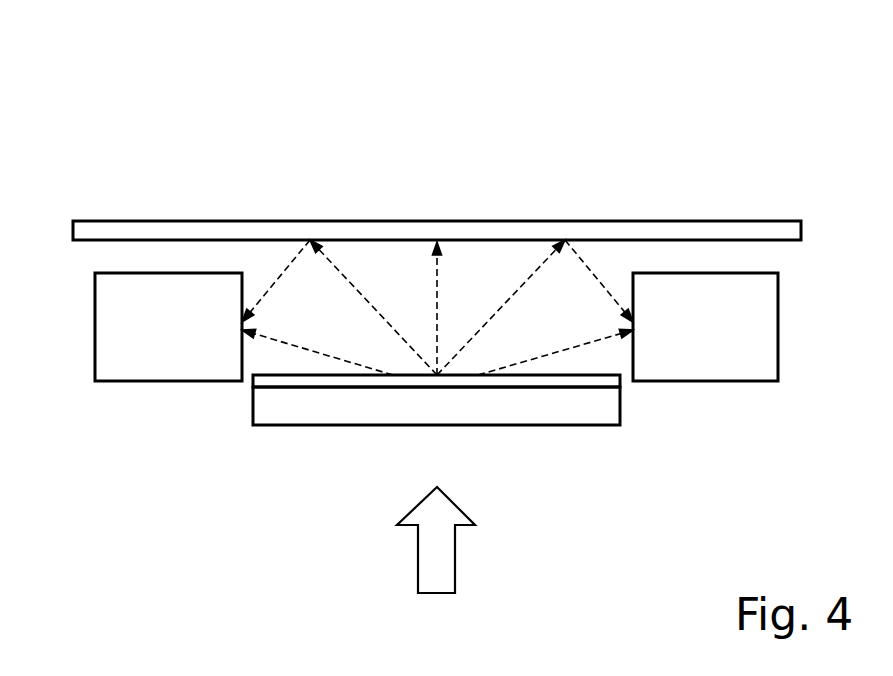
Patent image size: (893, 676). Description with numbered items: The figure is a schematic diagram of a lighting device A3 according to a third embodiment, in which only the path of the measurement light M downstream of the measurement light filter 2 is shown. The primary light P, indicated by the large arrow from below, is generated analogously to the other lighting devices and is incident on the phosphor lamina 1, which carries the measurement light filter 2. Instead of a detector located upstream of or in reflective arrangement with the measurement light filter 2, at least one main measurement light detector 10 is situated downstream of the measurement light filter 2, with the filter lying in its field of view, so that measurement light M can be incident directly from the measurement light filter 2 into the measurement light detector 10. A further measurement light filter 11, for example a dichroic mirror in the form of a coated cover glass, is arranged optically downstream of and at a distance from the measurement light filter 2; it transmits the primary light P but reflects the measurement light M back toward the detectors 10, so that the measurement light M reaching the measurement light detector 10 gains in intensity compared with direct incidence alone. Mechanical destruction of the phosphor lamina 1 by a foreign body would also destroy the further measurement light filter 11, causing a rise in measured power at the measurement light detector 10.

The lighting device A3 is at (150, 82).
The further measurement light filter 11 is at (242, 220).
The main measurement light detector 10 is at (95, 328).
The measurement light filter 2 is at (253, 380).
The phosphor lamina 1 is at (304, 426).
The measurement light M is at (314, 350).
The primary light P is at (455, 558).